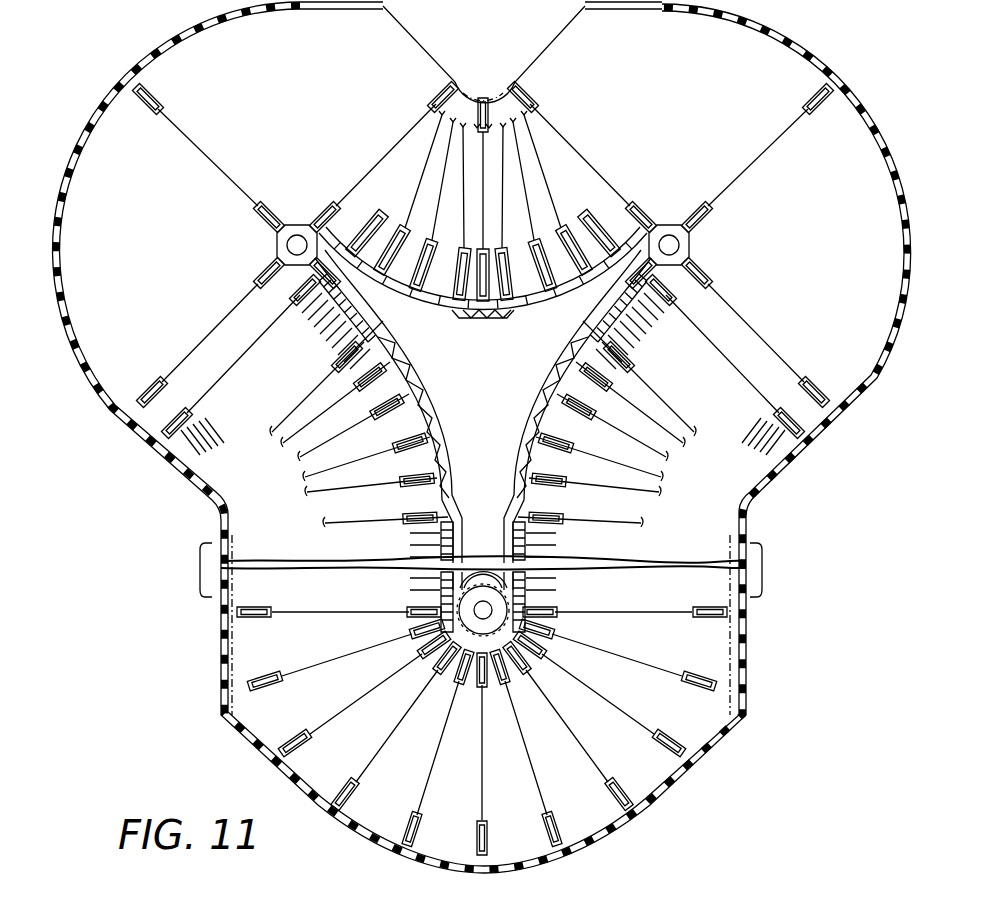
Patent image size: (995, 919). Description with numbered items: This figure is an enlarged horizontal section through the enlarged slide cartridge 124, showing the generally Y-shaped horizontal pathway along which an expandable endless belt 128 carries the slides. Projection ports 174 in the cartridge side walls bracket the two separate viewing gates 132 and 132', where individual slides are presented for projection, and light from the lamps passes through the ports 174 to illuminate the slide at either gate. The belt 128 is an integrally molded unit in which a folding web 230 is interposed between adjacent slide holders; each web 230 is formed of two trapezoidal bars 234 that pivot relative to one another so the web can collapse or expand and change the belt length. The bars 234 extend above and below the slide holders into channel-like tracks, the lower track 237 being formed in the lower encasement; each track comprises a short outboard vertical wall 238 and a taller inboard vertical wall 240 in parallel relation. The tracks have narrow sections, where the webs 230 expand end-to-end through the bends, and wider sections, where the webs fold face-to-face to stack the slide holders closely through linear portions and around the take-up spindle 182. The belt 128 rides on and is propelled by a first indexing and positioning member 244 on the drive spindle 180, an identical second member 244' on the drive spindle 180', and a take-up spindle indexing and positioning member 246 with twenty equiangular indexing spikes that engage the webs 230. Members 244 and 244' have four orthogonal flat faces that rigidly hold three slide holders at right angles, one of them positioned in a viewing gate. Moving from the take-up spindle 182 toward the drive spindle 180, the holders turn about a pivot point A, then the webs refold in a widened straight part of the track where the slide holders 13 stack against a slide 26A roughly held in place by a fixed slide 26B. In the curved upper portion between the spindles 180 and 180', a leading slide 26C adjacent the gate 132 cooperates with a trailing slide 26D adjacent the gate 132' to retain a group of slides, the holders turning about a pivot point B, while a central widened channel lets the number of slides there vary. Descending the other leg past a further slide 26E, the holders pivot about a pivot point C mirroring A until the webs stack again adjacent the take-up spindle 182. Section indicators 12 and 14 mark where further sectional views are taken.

The enlarged slide cartridge 124 is at (755, 741).
The projection ports 174 is at (60, 237).
The pivot point B is at (485, 89).
The pivot point A is at (215, 516).
The pivot point C is at (748, 516).
The slide 26A is at (222, 390).
The fixed slide 26B is at (202, 346).
The leading slide 26C is at (390, 153).
The trailing slide 26D is at (585, 158).
The arm 26E is at (771, 350).
The expandable endless belt 128 is at (672, 215).
The first viewing gate 132 is at (195, 144).
The second viewing gate 132' is at (771, 144).
The first drive spindle 180 is at (301, 222).
The second drive spindle 180' is at (657, 222).
The take-up spindle 182 is at (472, 610).
The folding web 230 is at (655, 300).
The web bars 234 is at (406, 386).
The lower channel-like track 237 is at (520, 469).
The short outboard vertical wall 238 is at (408, 292).
The taller inboard vertical wall 240 is at (525, 430).
The first drive spindle indexing and positioning member 244 is at (292, 271).
The second drive spindle indexing and positioning member 244' is at (674, 271).
The take-up spindle indexing and positioning member 246 is at (494, 610).
The section line 12 is at (113, 72).
The slide holders 13 is at (213, 617).
The section line 14 is at (583, 320).